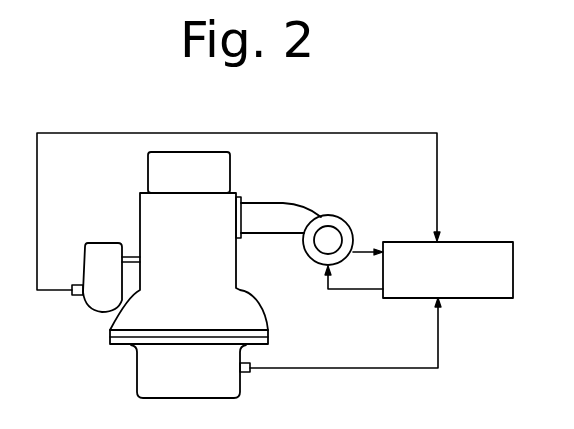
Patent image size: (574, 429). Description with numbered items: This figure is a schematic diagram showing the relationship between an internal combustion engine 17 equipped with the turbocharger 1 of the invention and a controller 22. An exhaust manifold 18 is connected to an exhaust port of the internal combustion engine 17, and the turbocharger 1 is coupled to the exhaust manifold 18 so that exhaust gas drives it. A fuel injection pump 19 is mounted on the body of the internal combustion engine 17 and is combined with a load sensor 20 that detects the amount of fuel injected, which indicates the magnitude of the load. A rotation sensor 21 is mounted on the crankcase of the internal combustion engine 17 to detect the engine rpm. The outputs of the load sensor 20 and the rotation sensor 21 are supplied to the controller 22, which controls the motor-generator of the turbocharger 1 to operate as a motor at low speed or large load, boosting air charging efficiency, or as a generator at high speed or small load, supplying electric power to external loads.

The turbocharger 1 is at (348, 222).
The internal combustion engine 17 is at (155, 218).
The exhaust manifold 18 is at (281, 202).
The fuel injection pump 19 is at (99, 304).
The load sensor 20 is at (70, 294).
The rotation sensor 21 is at (251, 373).
The controller 22 is at (487, 246).